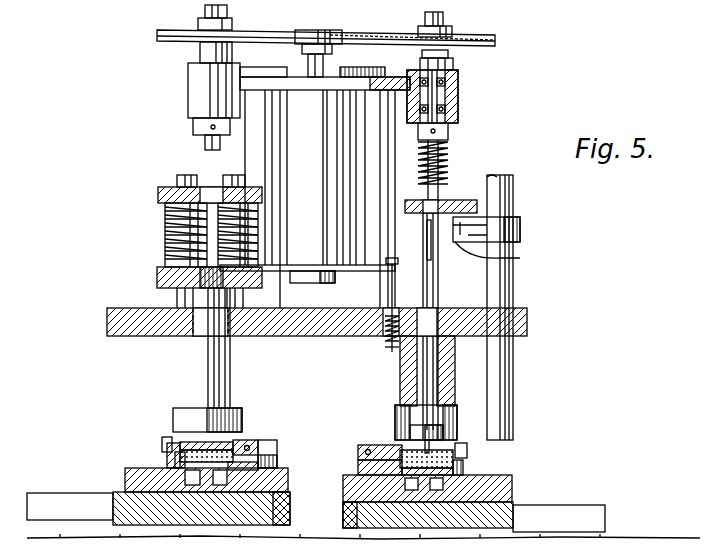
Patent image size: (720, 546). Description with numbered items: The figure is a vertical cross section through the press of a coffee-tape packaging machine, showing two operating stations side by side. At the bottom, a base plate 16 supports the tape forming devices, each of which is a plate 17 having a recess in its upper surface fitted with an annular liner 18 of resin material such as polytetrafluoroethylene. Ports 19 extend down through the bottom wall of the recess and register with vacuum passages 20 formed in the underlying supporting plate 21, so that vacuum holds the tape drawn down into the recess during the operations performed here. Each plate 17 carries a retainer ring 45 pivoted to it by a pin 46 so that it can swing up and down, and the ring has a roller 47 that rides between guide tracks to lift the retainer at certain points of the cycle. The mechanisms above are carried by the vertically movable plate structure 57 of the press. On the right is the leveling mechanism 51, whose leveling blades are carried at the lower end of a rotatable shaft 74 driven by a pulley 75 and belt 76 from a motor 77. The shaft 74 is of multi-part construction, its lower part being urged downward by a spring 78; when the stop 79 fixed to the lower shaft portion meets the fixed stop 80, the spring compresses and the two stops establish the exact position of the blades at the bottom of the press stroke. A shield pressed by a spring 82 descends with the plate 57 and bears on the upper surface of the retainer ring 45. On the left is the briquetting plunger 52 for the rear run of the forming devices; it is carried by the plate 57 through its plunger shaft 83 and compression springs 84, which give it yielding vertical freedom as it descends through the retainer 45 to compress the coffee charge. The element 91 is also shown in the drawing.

The base plate 16 is at (45, 498).
The plate 17 is at (168, 458).
The annular liner 18 is at (272, 458).
The ports 19 is at (258, 464).
The vacuum passages 20 is at (172, 470).
The supporting plate 21 is at (125, 476).
The retainer ring 45 is at (230, 445).
The pin 46 is at (252, 443).
The roller 47 is at (166, 437).
The leveling mechanism 51 is at (445, 440).
The briquetting plunger 52 is at (185, 408).
The vertically movable plate structure 57 is at (528, 326).
The rotatable shaft 74 is at (439, 286).
The pulley 75 is at (470, 40).
The belt 76 is at (355, 36).
The motor 77 is at (312, 133).
The spring 78 is at (442, 160).
The stop 79 is at (462, 198).
The fixed stop 80 is at (520, 258).
The spring 82 is at (392, 347).
The briquetting plunger shaft 83 is at (200, 350).
The compression springs 84 is at (165, 229).
The sleeve 91 is at (395, 418).